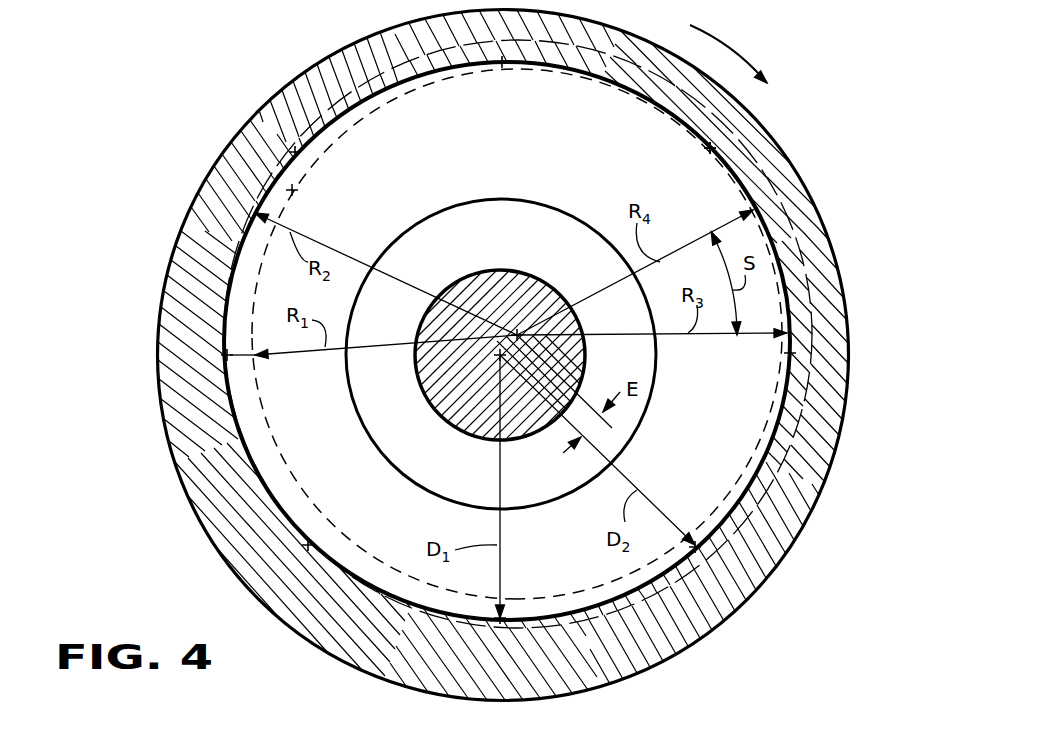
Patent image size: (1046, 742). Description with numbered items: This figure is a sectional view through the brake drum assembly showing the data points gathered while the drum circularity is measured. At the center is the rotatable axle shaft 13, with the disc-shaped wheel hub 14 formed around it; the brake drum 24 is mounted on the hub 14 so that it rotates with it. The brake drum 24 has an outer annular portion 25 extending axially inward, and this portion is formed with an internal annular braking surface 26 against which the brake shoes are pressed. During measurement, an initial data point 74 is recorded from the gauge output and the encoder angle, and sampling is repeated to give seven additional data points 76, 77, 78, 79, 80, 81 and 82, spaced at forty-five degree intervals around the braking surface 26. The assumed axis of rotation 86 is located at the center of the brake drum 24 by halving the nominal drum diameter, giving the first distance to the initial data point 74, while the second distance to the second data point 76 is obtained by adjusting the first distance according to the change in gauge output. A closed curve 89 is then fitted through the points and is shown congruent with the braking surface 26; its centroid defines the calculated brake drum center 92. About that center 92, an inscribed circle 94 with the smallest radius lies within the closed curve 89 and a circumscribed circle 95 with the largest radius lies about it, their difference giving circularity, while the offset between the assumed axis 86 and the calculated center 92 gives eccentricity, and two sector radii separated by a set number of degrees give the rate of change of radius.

The brake drum 24 is at (190, 178).
The outer annular portion 25 is at (830, 277).
The internal annular braking surface 26 is at (440, 70).
The axle shaft 13 is at (470, 290).
The wheel hub 14 is at (568, 228).
The calculated brake drum center 92 is at (517, 333).
The assumed axis of rotation 86 is at (498, 357).
The circumscribed circle 95 is at (304, 192).
The inscribed circle 94 is at (273, 433).
The data point 79 is at (503, 63).
The data point 80 is at (297, 152).
The data point 78 is at (708, 152).
The fitted closed curve 89 is at (709, 147).
The data point 77 is at (789, 354).
The second data point 76 is at (695, 545).
The initial data point 74 is at (503, 617).
The data point 82 is at (310, 545).
The data point 81 is at (233, 357).